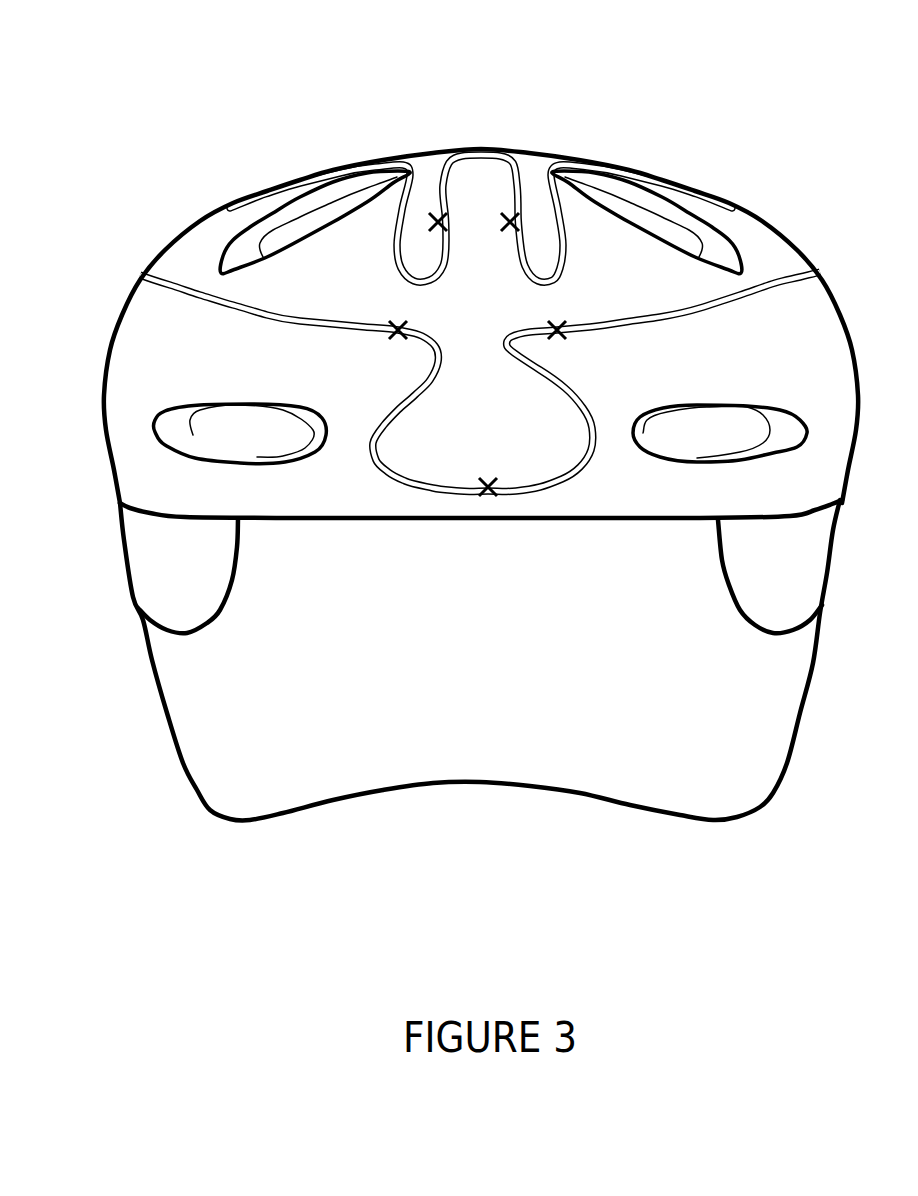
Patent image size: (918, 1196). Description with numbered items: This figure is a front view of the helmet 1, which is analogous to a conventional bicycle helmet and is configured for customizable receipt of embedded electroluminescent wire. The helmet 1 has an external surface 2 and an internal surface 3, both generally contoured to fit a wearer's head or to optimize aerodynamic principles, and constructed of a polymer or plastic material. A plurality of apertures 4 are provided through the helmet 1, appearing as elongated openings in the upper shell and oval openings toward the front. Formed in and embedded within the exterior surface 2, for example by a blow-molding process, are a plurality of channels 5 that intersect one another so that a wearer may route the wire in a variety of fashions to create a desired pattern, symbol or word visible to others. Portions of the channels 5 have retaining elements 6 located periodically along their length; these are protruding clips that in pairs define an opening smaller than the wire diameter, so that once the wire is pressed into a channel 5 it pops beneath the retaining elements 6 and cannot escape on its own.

The helmet 1 is at (805, 68).
The external surface 2 is at (173, 370).
The internal surface 3 is at (310, 657).
The apertures 4 is at (300, 227).
The channels 5 is at (433, 175).
The retaining elements 6 is at (432, 218).